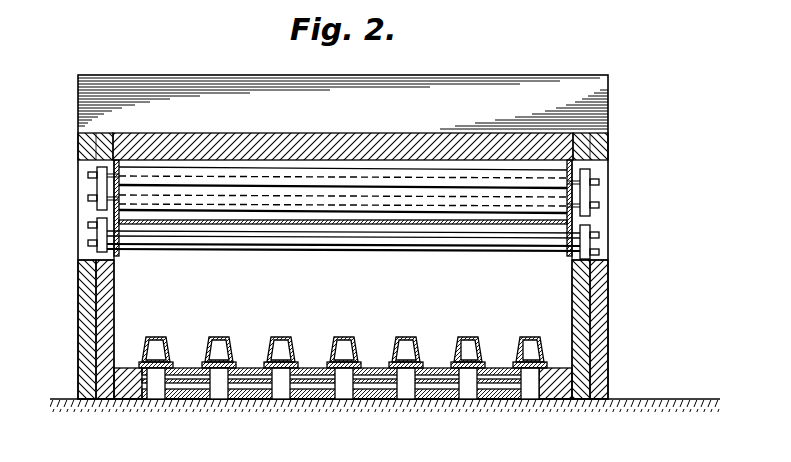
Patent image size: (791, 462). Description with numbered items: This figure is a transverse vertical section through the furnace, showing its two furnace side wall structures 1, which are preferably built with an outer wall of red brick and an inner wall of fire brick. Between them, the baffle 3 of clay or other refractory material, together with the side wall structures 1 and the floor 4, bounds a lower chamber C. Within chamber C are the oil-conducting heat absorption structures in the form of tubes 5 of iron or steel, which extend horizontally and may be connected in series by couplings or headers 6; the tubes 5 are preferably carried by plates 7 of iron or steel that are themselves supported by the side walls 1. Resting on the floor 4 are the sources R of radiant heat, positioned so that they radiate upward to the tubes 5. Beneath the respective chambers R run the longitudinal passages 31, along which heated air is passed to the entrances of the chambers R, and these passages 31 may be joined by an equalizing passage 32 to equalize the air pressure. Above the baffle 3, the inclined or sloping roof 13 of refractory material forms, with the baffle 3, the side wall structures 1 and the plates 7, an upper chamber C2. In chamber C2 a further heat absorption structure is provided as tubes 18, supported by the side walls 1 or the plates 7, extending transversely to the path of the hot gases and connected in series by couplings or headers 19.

The furnace side wall structure 1 is at (102, 302).
The baffle 3 is at (222, 236).
The floor 4 is at (381, 400).
The tube 5 is at (304, 233).
The coupling or header 6 is at (97, 218).
The plate 7 is at (137, 152).
The roof 13 is at (416, 133).
The tube 18 is at (243, 201).
The coupling or header 19 is at (102, 187).
The passage 31 is at (157, 392).
The equalizing passage 32 is at (251, 383).
The chamber C is at (351, 288).
The chamber C2 is at (203, 167).
The source of radiant heat R is at (210, 336).